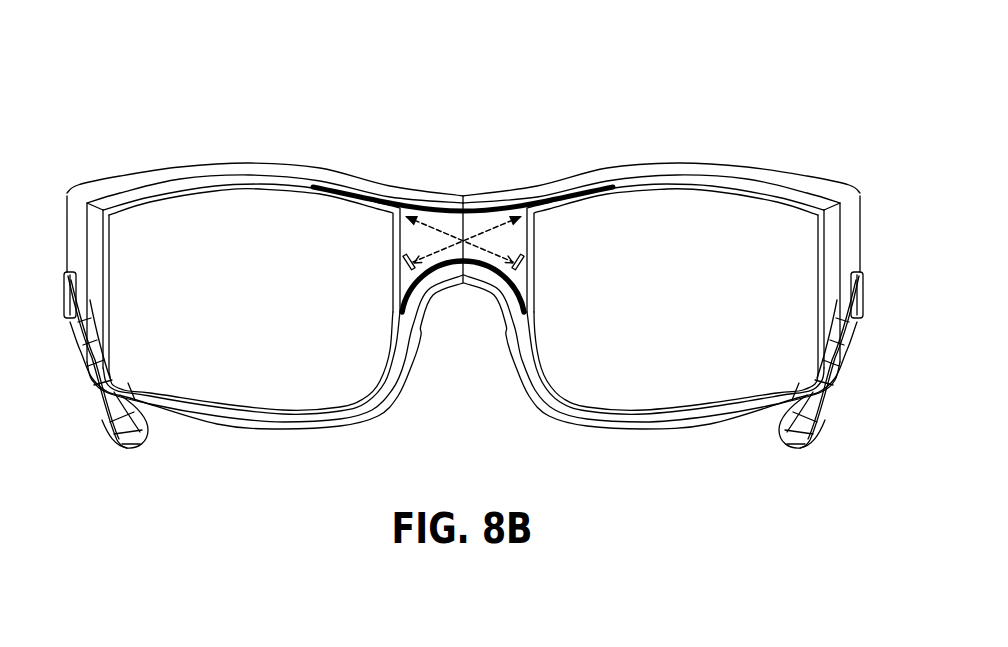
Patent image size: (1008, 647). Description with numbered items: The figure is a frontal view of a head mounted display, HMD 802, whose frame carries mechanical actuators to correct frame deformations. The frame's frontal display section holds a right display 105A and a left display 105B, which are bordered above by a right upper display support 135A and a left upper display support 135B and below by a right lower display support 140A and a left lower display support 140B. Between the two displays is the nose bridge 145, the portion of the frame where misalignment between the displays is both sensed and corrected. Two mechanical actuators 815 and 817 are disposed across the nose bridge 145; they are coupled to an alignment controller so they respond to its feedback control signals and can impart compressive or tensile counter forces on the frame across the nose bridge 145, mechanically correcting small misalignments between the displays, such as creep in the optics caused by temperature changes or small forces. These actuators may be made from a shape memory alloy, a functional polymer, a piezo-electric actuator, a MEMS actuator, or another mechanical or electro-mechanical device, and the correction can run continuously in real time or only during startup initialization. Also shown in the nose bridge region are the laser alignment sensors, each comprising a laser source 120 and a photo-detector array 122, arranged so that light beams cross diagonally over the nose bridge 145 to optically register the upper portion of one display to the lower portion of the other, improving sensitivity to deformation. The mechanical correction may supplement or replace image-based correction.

The HMD 802 is at (795, 53).
The nose bridge 145 is at (432, 147).
The mechanical actuator 815 is at (460, 200).
The mechanical actuator 817 is at (495, 278).
The laser source 120 is at (404, 208).
The photo-detector array 122 is at (402, 259).
The right upper display support 135A is at (178, 163).
The left upper display support 135B is at (730, 165).
The right display 105A is at (223, 328).
The left display 105B is at (660, 328).
The right lower display support 140A is at (277, 423).
The left lower display support 140B is at (643, 432).